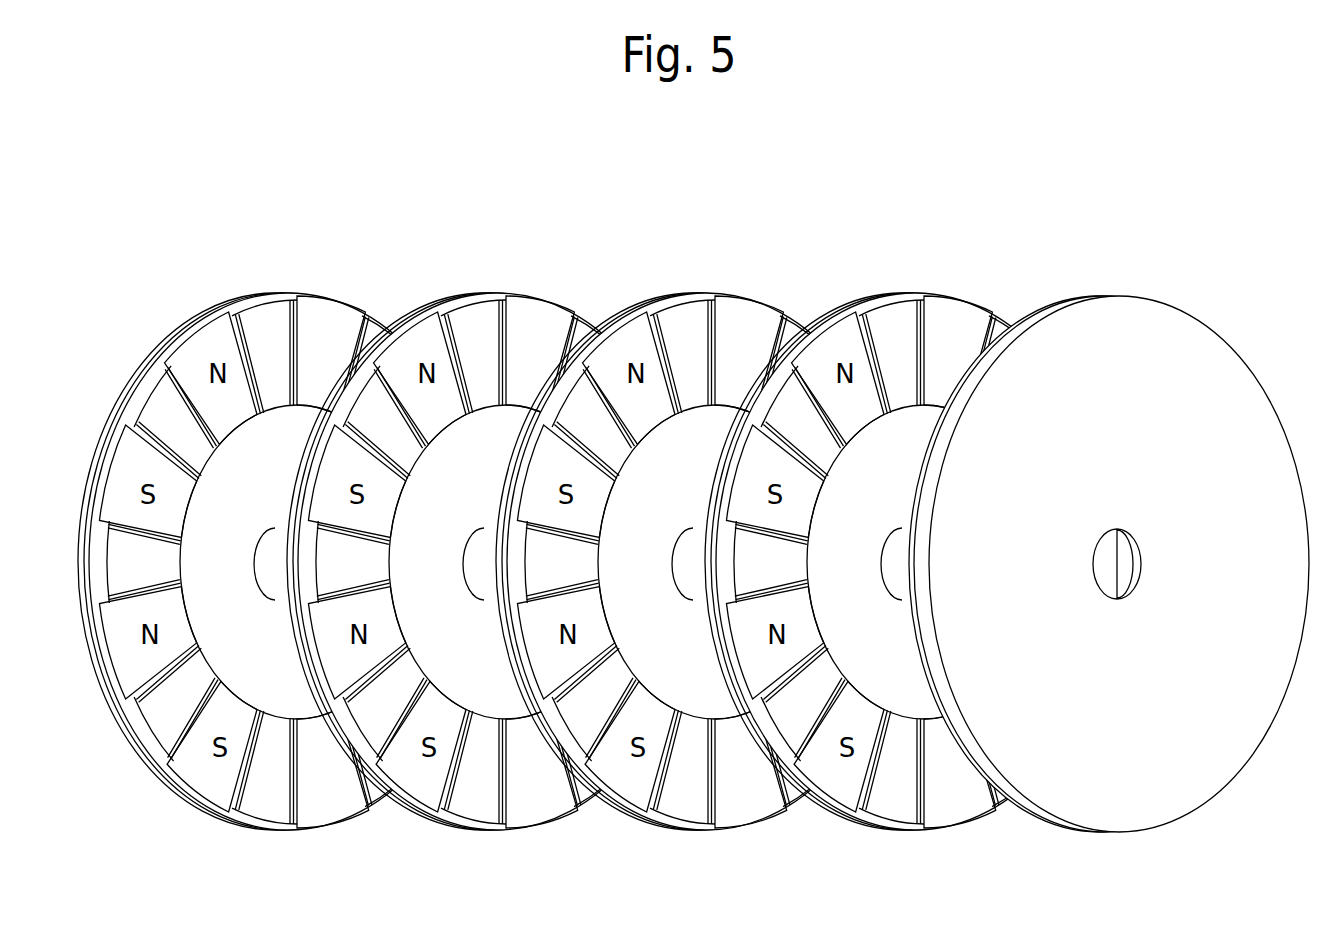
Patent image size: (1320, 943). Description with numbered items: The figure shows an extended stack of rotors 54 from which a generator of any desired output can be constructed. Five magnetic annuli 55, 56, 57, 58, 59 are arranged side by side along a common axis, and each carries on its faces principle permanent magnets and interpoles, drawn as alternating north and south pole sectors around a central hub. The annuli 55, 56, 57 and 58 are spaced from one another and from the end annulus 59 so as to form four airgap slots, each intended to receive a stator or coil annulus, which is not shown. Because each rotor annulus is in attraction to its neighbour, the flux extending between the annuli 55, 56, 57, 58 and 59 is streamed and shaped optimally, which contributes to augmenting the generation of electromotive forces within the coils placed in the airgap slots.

The extended stack of rotors 54 is at (163, 154).
The annulus 55 is at (223, 295).
The annulus 56 is at (432, 295).
The annulus 57 is at (641, 295).
The annulus 58 is at (850, 295).
The annulus 59 is at (1060, 295).